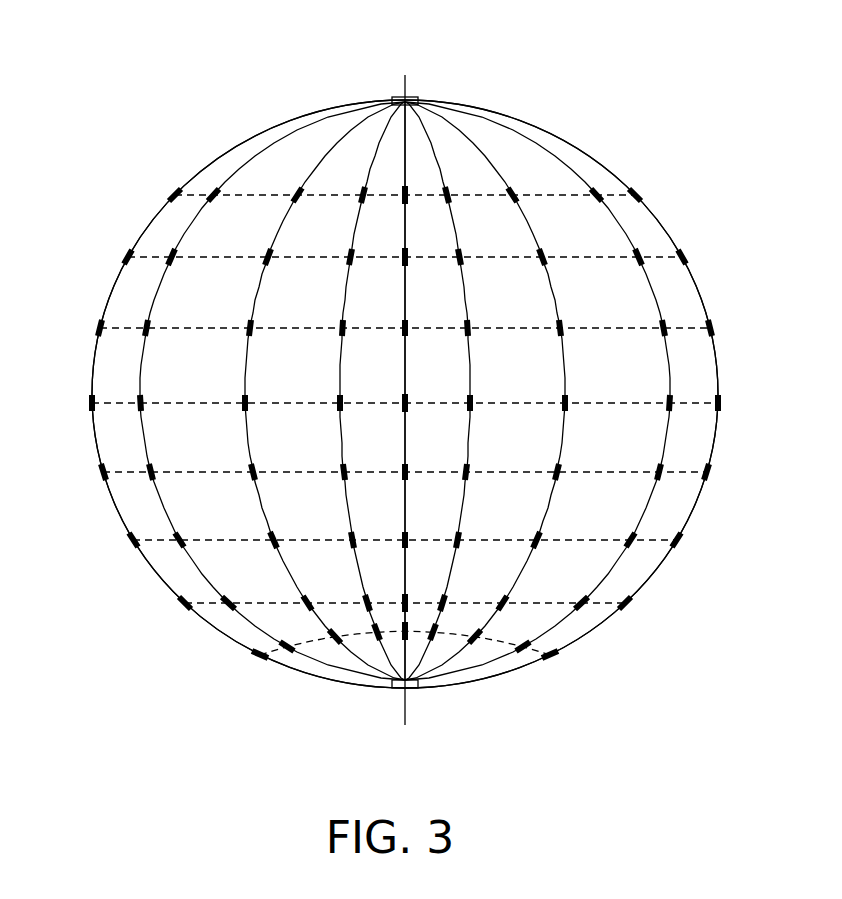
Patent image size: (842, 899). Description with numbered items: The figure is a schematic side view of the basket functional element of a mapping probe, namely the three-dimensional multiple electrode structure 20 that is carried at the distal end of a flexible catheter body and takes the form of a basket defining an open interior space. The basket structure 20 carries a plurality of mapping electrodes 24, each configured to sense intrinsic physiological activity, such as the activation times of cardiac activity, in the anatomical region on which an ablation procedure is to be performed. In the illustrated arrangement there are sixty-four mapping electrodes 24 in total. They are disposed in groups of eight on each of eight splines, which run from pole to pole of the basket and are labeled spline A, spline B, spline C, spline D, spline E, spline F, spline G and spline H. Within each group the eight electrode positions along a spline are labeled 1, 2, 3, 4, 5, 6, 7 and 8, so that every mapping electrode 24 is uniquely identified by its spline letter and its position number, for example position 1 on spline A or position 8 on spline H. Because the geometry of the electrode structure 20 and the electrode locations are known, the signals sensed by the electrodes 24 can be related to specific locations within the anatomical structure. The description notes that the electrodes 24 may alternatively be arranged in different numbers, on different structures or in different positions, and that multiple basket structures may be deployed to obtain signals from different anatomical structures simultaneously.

The multiple electrode structure 20 is at (153, 70).
The electrode position 1 is at (160, 193).
The electrode position 2 is at (118, 254).
The electrode position 3 is at (96, 327).
The electrode position 4 is at (88, 402).
The electrode position 5 is at (100, 474).
The electrode position 6 is at (130, 541).
The electrode position 7 is at (176, 605).
The electrode position 8 is at (250, 660).
The mapping electrodes 24 is at (685, 257).
The spline A is at (422, 125).
The spline B is at (457, 130).
The spline C is at (533, 147).
The spline D is at (620, 172).
The spline E is at (387, 107).
The spline F is at (353, 102).
The spline G is at (255, 160).
The spline H is at (308, 180).